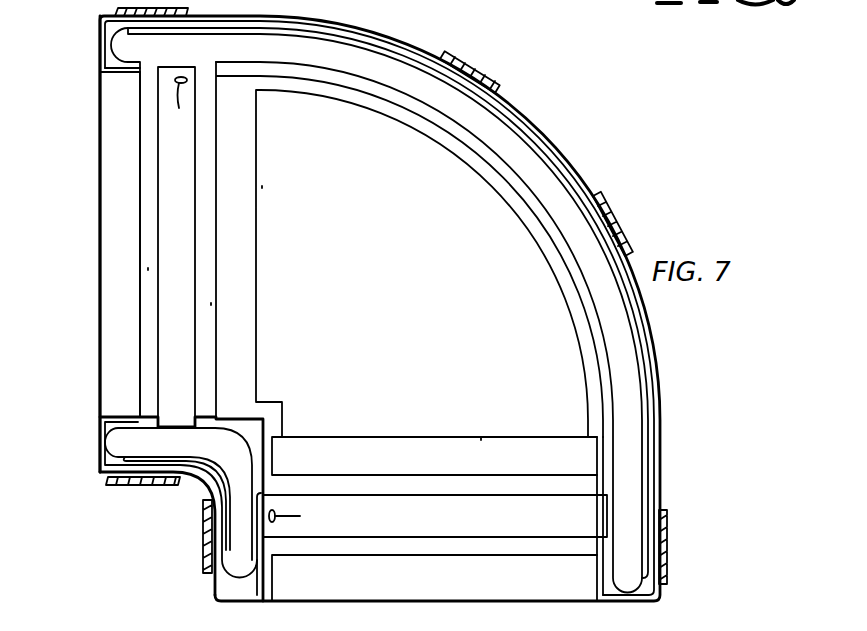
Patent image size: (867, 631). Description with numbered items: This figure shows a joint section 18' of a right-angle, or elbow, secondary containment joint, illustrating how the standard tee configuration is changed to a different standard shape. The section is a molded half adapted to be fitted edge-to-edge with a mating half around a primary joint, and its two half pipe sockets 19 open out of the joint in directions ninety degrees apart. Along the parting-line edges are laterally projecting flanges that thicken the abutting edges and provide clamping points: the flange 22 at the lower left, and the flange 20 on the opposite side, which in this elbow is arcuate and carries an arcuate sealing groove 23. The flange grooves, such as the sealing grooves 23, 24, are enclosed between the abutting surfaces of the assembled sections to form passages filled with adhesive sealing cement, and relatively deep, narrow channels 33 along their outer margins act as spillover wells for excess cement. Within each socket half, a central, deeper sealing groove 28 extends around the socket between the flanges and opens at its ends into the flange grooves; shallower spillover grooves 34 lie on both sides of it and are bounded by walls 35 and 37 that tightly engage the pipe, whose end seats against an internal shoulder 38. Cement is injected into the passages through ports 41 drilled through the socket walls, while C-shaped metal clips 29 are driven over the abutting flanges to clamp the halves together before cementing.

The joint section 18' is at (715, 157).
The pipe socket 19 is at (100, 212).
The flange 20 is at (531, 127).
The flange 22 is at (207, 478).
The sealing groove 23 is at (527, 168).
The sealing groove 24 is at (184, 462).
The sealing groove 28 is at (196, 262).
The metal clip 29 is at (491, 82).
The channel 33 is at (140, 457).
The spillover groove 34 is at (148, 268).
The wall 35 is at (134, 257).
The wall 37 is at (250, 259).
The internal shoulder 38 is at (262, 186).
The port 41 is at (179, 108).